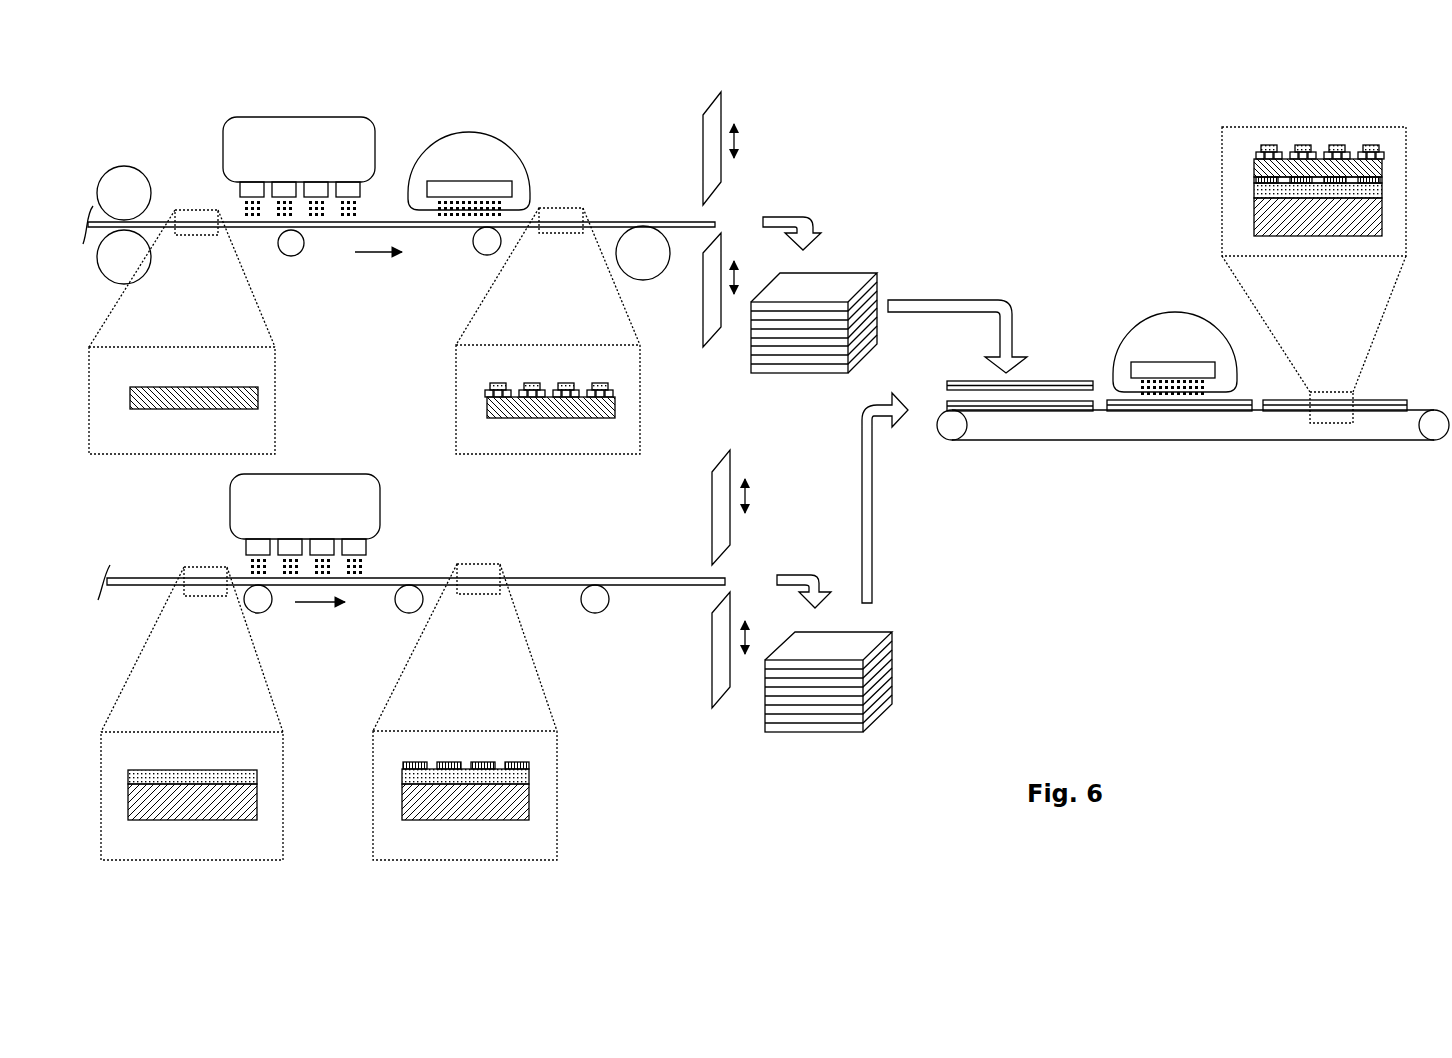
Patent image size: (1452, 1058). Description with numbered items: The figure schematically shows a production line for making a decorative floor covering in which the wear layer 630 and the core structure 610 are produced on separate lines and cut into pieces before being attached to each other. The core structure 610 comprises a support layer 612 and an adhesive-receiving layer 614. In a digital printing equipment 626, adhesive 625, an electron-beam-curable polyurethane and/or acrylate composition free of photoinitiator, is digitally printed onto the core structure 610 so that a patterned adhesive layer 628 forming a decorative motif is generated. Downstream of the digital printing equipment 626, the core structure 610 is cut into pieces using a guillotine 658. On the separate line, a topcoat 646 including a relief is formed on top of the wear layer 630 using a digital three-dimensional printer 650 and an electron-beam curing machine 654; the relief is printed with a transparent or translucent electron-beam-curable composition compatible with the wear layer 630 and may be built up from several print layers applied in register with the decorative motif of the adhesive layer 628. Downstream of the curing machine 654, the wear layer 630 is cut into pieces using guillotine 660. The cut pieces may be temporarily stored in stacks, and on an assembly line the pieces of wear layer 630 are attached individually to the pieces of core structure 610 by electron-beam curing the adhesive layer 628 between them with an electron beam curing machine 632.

The core structure 610 is at (150, 578).
The support layer 612 is at (173, 820).
The adhesive-receiving layer 614 is at (160, 770).
The adhesive 625 is at (362, 571).
The digital printing equipment 626 is at (382, 506).
The adhesive layer 628 is at (529, 765).
The wear layer 630 is at (157, 222).
The electron beam curing machine 632 is at (1152, 318).
The topcoat 646 is at (622, 388).
The dispensing head 650 is at (358, 116).
The electron-beam curing machine 654 is at (528, 158).
The guillotine 658 is at (704, 537).
The guillotine 660 is at (762, 148).